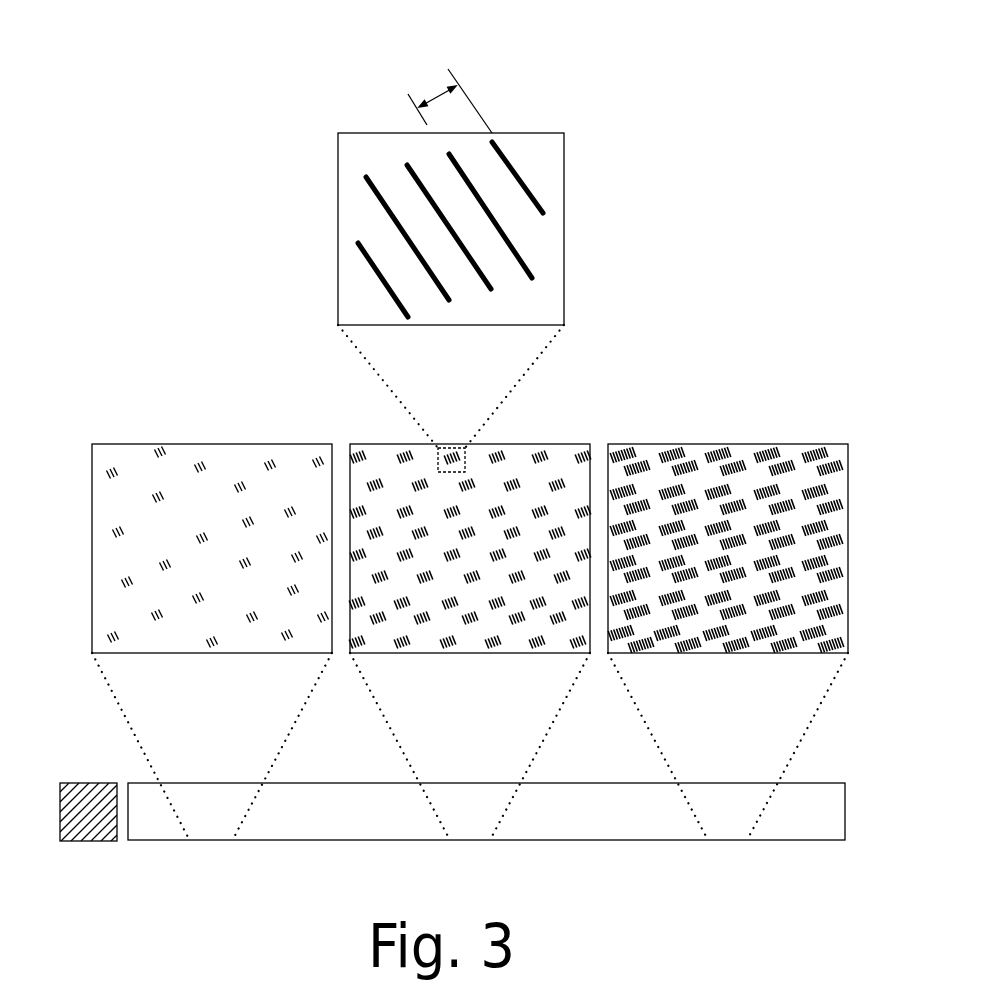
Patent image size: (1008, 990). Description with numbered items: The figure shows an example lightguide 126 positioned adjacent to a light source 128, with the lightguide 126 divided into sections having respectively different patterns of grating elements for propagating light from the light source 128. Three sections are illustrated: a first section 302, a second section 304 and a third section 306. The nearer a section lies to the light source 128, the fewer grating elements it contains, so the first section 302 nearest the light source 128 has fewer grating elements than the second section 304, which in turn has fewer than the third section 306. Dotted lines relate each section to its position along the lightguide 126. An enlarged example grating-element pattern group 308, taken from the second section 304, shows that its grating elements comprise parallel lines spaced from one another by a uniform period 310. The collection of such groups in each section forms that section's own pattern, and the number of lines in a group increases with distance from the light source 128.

The lightguide 126 is at (548, 880).
The light source 128 is at (136, 890).
The first section 302 is at (219, 433).
The second section 304 is at (533, 433).
The third section 306 is at (735, 433).
The grating-element pattern group 308 is at (681, 149).
The period 310 is at (410, 60).